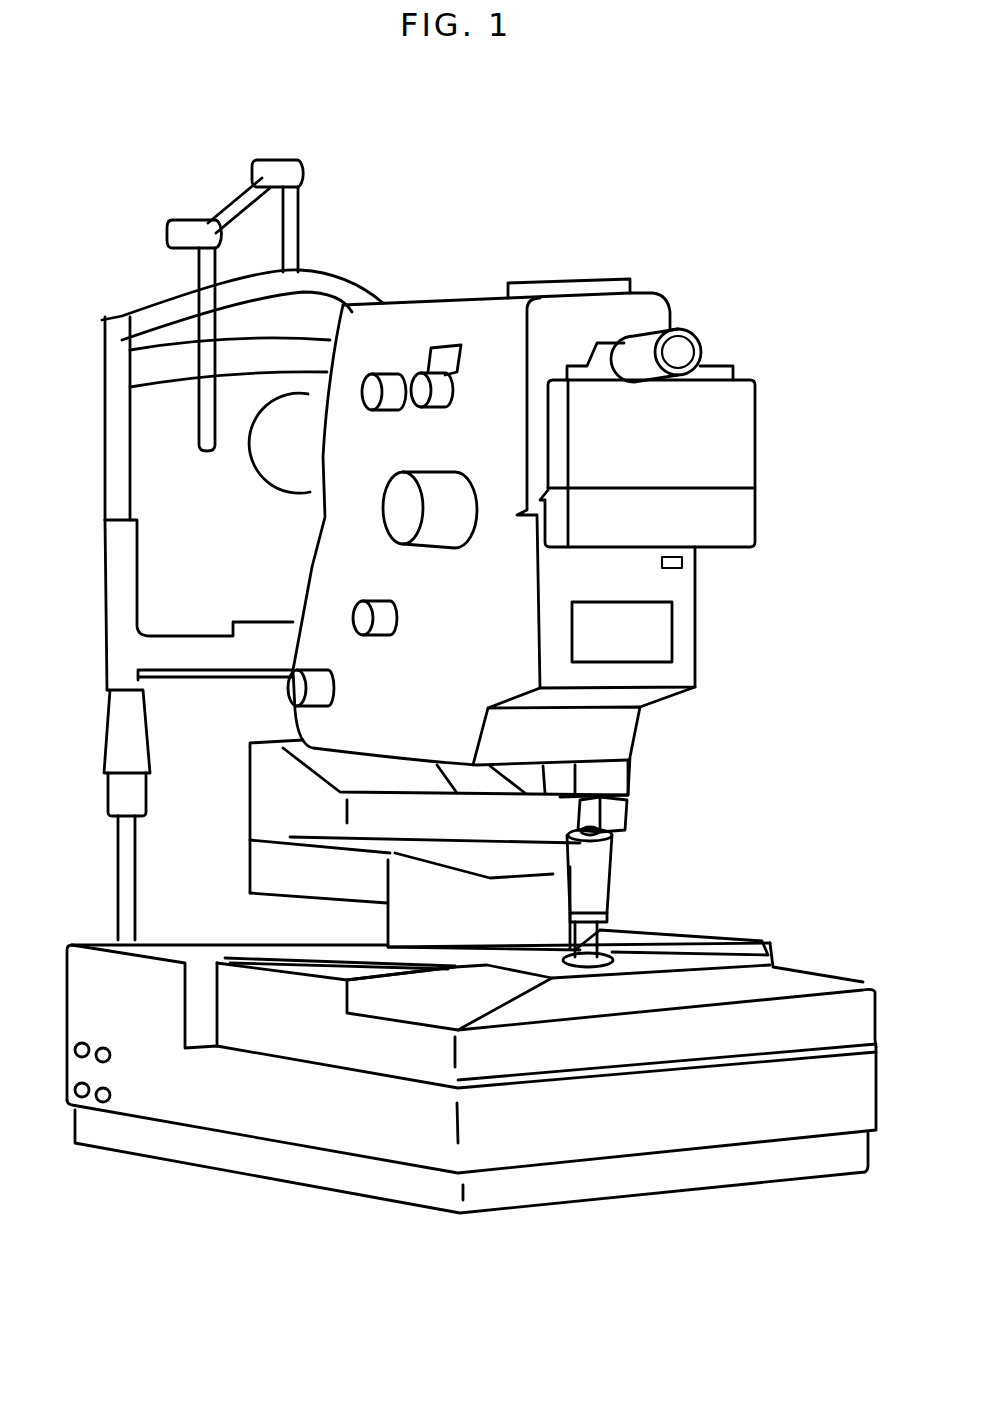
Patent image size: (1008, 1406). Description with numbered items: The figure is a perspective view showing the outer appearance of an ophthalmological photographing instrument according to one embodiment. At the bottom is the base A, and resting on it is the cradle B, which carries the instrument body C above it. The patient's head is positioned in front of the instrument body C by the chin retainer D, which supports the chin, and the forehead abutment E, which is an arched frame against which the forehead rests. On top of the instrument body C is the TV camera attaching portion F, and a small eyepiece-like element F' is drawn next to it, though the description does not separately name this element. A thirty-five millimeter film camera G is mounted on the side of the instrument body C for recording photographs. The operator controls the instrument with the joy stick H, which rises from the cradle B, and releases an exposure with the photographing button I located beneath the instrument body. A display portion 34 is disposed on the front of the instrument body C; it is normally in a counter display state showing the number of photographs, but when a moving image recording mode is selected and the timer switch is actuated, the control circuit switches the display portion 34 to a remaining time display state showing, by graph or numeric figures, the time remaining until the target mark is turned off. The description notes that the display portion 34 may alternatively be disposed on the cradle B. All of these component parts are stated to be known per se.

The base A is at (332, 1132).
The cradle B is at (418, 1060).
The instrument body C is at (683, 580).
The chin retainer D is at (233, 630).
The forehead abutment E is at (308, 353).
The TV camera attaching portion F is at (571, 229).
The eyepiece F' is at (691, 300).
The 35 mm film camera G is at (718, 450).
The joy stick H is at (597, 878).
The photographing button I is at (597, 815).
The display portion 34 is at (655, 637).